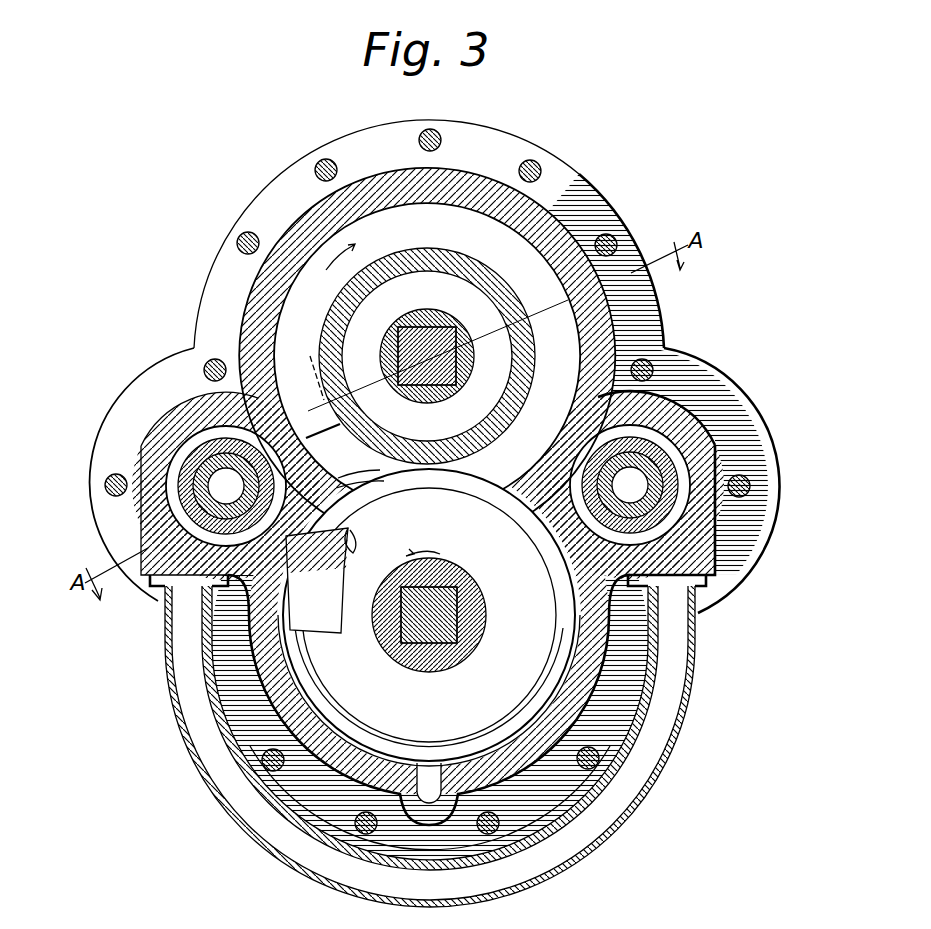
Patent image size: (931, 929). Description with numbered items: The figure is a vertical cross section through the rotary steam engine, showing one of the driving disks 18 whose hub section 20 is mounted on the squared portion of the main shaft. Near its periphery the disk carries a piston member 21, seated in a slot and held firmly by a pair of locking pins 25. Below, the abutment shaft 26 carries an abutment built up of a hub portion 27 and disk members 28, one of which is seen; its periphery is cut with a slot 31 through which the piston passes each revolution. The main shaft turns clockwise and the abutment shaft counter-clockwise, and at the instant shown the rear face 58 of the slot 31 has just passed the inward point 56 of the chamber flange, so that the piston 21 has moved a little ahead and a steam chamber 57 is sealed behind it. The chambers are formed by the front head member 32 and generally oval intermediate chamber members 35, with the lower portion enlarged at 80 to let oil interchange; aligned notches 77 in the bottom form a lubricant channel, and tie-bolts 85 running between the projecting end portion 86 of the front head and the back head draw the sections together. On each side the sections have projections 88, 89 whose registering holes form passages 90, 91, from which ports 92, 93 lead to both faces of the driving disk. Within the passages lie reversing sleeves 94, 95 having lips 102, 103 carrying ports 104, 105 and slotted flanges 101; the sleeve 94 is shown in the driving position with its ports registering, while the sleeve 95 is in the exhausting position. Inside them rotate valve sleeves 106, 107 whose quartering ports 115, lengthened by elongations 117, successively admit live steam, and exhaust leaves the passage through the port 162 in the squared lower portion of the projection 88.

The disk 18 is at (352, 228).
The hub section 20 is at (422, 312).
The piston member 21 is at (358, 452).
The locking pins 25 is at (362, 400).
The abutment shaft 26 is at (452, 603).
The hub portion 27 is at (240, 334).
The disk member 28 is at (465, 648).
The peripheral slots 31 is at (316, 608).
The front head member 32 is at (368, 126).
The intermediate chamber member 35 is at (479, 167).
The point 56 is at (520, 478).
The steam chamber 57 is at (398, 436).
The rear face 58 is at (344, 547).
The notches 77 is at (425, 782).
The enlargement 80 is at (305, 698).
The tie-bolts 85 is at (430, 124).
The projecting end portion 86 is at (568, 172).
The side projection 88 is at (139, 425).
The side projection 89 is at (670, 455).
The passage 90 is at (182, 437).
The passage 91 is at (663, 460).
The ports 92 is at (330, 492).
The ports 93 is at (536, 458).
The reversing sleeve 94 is at (170, 487).
The reversing sleeve 95 is at (680, 475).
The slots 101 is at (173, 527).
The lip 102 is at (285, 545).
The lip 103 is at (678, 390).
The ports 104 is at (347, 538).
The ports 105 is at (655, 346).
The valve sleeve 106 is at (160, 490).
The valve sleeve 107 is at (640, 535).
The ports 115 is at (280, 612).
The elongations 117 is at (205, 415).
The port 162 is at (158, 586).